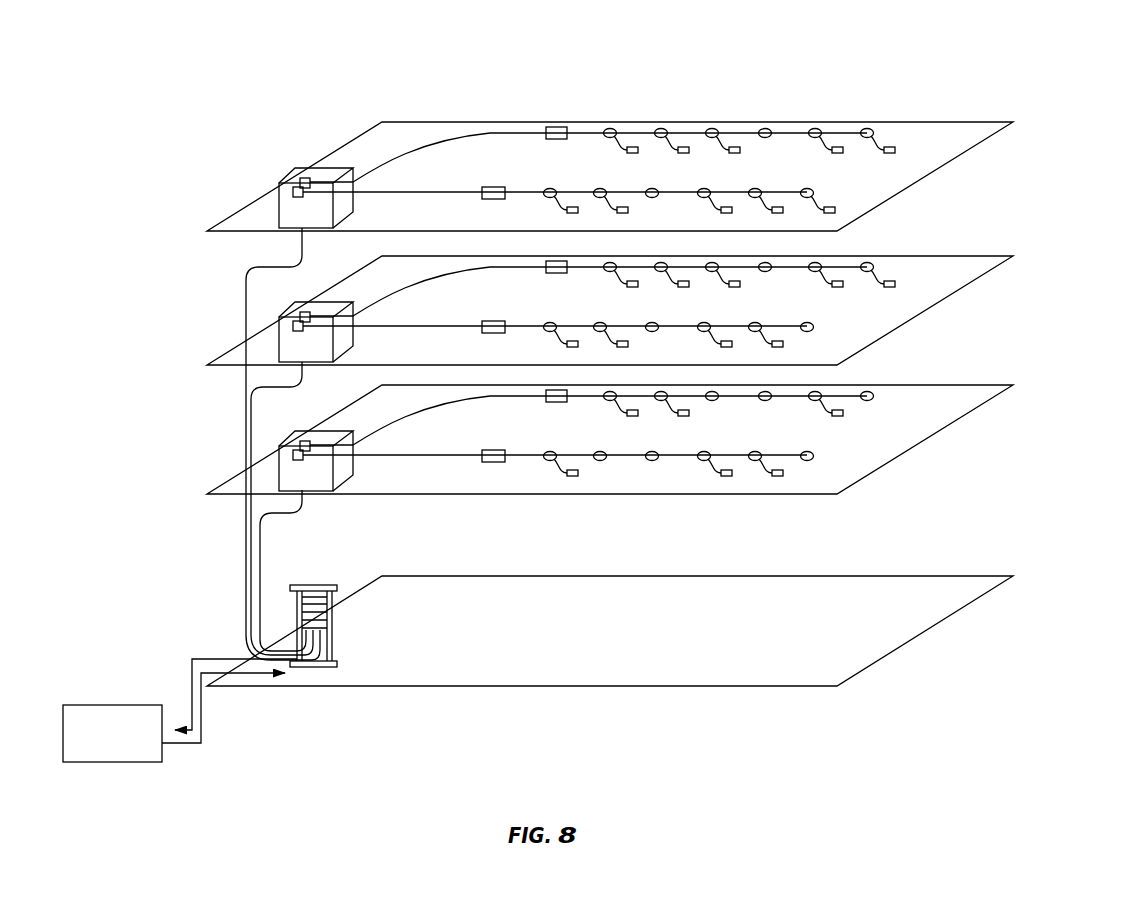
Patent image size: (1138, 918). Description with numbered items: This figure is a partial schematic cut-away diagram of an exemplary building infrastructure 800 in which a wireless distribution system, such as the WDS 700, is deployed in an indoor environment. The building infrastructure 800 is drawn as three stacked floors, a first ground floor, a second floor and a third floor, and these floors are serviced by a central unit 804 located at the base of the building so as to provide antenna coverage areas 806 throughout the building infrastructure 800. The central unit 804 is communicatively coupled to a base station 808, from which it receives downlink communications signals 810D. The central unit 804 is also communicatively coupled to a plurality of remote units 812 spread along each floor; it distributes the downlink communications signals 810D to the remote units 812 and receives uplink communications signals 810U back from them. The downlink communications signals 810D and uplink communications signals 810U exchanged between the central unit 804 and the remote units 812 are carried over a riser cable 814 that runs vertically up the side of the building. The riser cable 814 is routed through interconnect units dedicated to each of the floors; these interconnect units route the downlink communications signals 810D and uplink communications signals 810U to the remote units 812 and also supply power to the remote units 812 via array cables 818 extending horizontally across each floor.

The WDS 700 is at (960, 530).
The building infrastructure 800 is at (743, 68).
The central unit 804 is at (352, 629).
The antenna coverage areas 806 is at (950, 264).
The base station 808 is at (132, 745).
The downlink communications signals 810D is at (454, 126).
The uplink communications signals 810U is at (208, 648).
The remote units 812 is at (838, 146).
The riser cable 814 is at (246, 578).
The array cables 818 is at (488, 132).